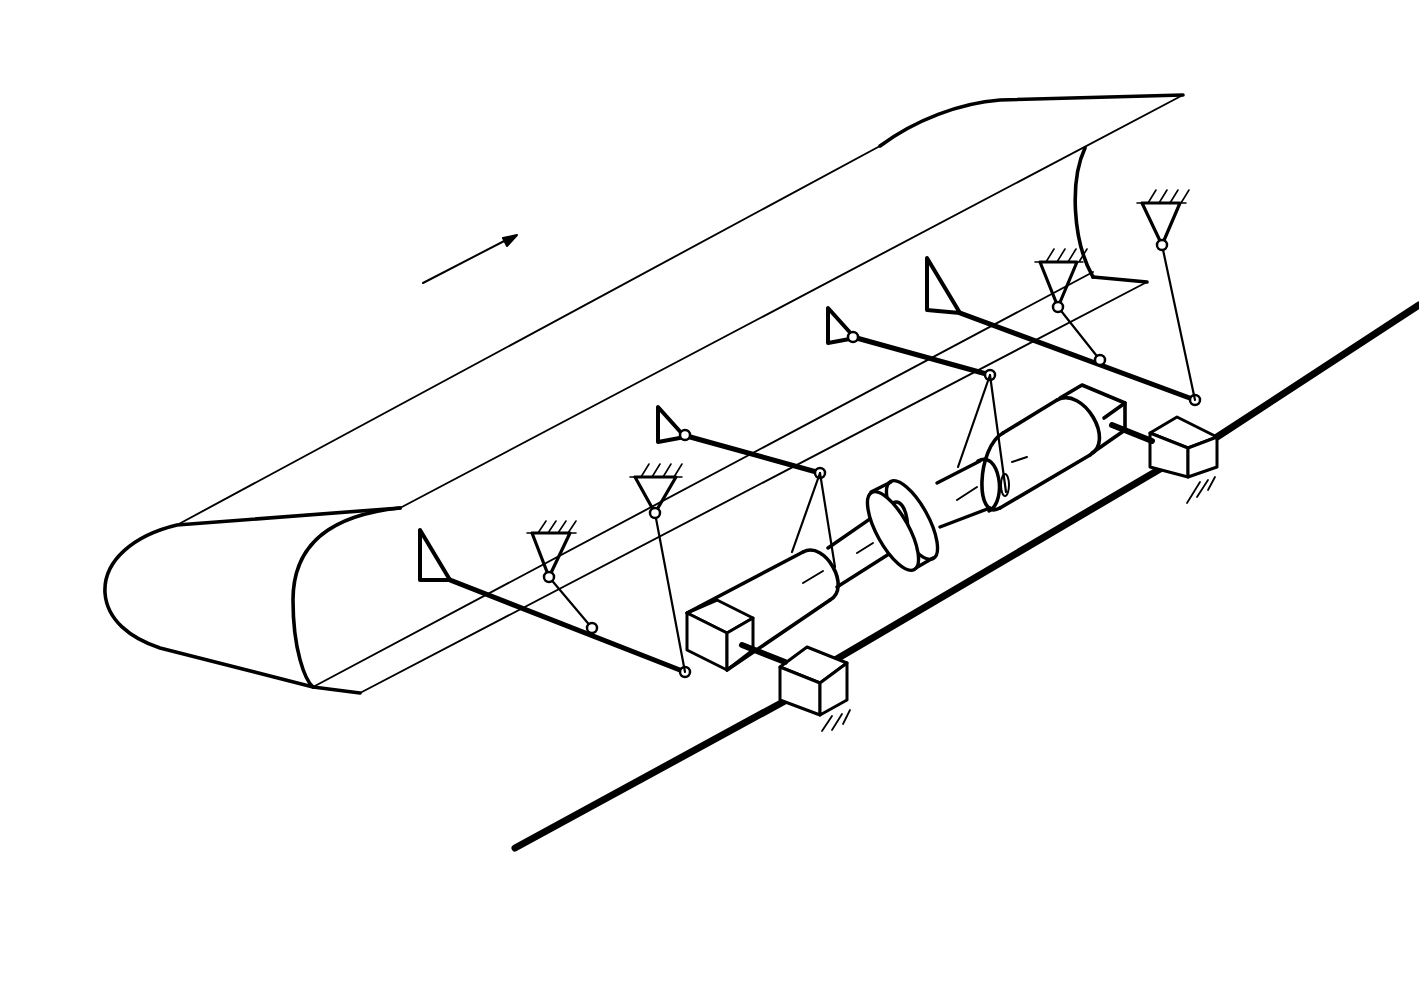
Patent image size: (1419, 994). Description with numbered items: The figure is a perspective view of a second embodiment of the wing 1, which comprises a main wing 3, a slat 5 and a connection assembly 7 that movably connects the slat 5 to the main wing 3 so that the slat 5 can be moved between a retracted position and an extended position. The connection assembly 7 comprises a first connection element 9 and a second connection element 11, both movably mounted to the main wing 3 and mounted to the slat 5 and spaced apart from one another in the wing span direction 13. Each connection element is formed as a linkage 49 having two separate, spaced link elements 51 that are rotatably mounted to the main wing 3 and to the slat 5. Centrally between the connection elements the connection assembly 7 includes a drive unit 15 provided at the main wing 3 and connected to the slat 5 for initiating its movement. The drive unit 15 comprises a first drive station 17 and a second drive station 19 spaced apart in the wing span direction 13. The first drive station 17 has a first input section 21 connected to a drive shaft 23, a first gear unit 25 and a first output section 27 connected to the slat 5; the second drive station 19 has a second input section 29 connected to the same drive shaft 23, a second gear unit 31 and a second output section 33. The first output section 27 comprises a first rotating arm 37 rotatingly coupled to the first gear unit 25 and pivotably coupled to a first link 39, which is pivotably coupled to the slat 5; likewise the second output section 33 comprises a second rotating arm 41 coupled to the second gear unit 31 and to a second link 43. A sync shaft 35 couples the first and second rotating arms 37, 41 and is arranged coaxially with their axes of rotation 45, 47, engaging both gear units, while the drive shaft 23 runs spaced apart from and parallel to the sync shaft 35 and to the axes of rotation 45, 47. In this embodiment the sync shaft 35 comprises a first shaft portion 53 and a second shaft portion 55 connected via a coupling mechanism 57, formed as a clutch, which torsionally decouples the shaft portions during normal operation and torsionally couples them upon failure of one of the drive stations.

The wing 1 is at (262, 218).
The main wing 3 is at (1068, 601).
The slat 5 is at (659, 334).
The connection assembly 7 is at (1285, 241).
The first connection element 9 is at (1232, 349).
The second connection element 11 is at (602, 680).
The wing span direction 13 is at (458, 262).
The drive unit 15 is at (1265, 462).
The first drive station 17 is at (1190, 522).
The second drive station 19 is at (864, 740).
The first input section 21 is at (1132, 445).
The drive shaft 23 is at (962, 593).
The first gear unit 25 is at (1043, 454).
The first output section 27 is at (990, 403).
The second input section 29 is at (767, 653).
The second gear unit 31 is at (766, 614).
The second output section 33 is at (813, 500).
The sync shaft 35 is at (932, 480).
The first rotating arm 37 is at (983, 442).
The first link 39 is at (873, 338).
The second rotating arm 41 is at (807, 537).
The second link 43 is at (733, 445).
The axis of rotation 45 is at (980, 488).
The axis of rotation 47 is at (857, 558).
The linkage 49 is at (890, 515).
The link element 51 is at (667, 565).
The first shaft portion 53 is at (953, 510).
The second shaft portion 55 is at (853, 533).
The coupling mechanism 57 is at (905, 487).